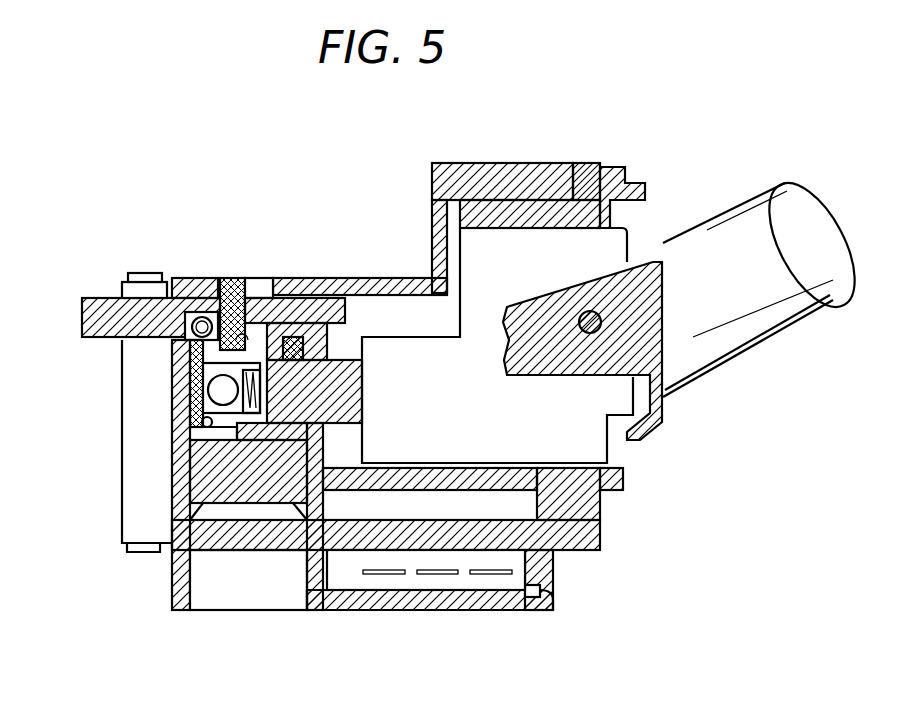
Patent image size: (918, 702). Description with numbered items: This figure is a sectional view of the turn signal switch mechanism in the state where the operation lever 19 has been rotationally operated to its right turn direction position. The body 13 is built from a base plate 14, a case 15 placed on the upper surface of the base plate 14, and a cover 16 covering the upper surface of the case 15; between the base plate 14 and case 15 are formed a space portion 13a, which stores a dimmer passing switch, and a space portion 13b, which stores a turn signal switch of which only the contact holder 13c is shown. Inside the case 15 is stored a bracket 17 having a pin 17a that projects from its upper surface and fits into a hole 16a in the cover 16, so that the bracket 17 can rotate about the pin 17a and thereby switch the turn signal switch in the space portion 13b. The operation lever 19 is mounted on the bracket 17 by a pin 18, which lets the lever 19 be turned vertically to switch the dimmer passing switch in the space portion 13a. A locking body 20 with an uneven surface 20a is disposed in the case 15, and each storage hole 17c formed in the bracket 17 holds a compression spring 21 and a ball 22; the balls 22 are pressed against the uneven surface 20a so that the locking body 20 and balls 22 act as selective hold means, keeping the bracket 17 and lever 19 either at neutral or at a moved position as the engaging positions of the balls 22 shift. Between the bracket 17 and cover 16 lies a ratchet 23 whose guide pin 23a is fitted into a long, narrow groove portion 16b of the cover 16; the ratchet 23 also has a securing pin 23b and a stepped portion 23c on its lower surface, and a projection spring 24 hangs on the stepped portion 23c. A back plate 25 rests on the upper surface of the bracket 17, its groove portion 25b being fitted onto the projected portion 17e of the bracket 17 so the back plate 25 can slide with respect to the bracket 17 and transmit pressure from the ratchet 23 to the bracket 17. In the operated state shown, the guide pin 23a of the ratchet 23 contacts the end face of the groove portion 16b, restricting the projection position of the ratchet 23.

The body 13 is at (172, 497).
The space portion 13a is at (535, 508).
The space portion 13b is at (293, 450).
The contact holder 13c is at (270, 440).
The base plate 14 is at (603, 545).
The case 15 is at (623, 483).
The cover 16 is at (450, 162).
The hole 16a is at (590, 163).
The groove portion 16b is at (255, 283).
The bracket 17 is at (592, 428).
The pin 17a is at (600, 166).
The storage hole 17c is at (200, 402).
The projected portion 17e is at (365, 375).
The pin 18 is at (588, 311).
The operation lever 19 is at (776, 198).
The locking body 20 is at (205, 372).
The uneven surface 20a is at (207, 435).
The compression spring 21 is at (247, 415).
The ball 22 is at (225, 447).
The ratchet 23 is at (88, 297).
The guide pin 23a is at (233, 278).
The securing pin 23b is at (170, 343).
The stepped portion 23c is at (167, 278).
The projection spring 24 is at (157, 323).
The back plate 25 is at (338, 336).
The groove portion 25b is at (292, 298).